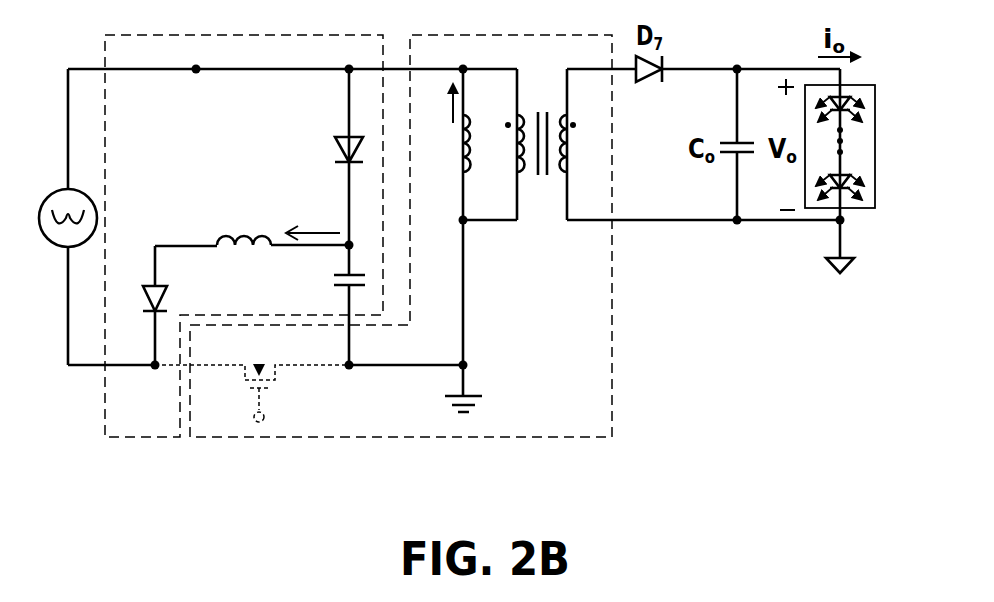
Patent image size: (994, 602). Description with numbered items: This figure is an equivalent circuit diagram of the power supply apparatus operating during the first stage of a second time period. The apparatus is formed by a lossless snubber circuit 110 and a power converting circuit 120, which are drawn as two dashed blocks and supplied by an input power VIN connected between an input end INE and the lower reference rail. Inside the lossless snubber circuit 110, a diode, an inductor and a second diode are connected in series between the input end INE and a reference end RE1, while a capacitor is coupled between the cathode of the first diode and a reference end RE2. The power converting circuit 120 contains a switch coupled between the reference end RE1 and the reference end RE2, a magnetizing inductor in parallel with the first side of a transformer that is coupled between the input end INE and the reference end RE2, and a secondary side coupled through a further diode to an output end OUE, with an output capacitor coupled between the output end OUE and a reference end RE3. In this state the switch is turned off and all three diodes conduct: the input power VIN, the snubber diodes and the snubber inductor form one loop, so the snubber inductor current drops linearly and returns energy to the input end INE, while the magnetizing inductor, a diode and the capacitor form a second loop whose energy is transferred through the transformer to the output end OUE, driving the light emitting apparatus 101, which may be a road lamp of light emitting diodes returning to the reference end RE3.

The lossless snubber circuit 110 is at (243, 35).
The power converting circuit 120 is at (500, 35).
The light emitting apparatus 101 is at (862, 85).
The input end INE is at (196, 73).
The output end OUE is at (737, 65).
The input power VIN is at (57, 242).
The reference end RE1 is at (155, 369).
The reference end RE2 is at (349, 369).
The reference end RE3 is at (839, 268).